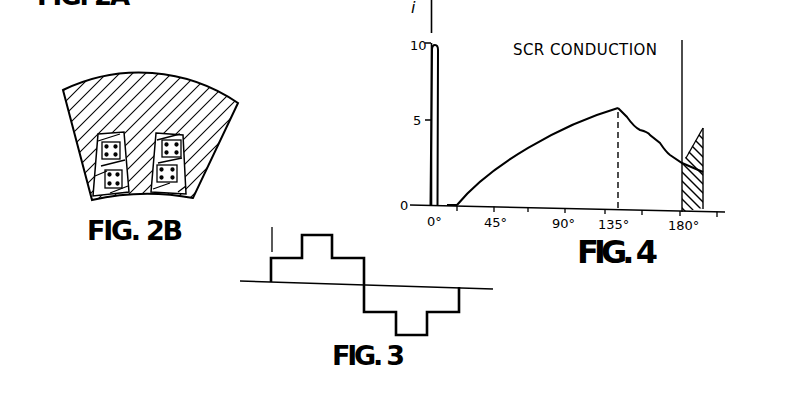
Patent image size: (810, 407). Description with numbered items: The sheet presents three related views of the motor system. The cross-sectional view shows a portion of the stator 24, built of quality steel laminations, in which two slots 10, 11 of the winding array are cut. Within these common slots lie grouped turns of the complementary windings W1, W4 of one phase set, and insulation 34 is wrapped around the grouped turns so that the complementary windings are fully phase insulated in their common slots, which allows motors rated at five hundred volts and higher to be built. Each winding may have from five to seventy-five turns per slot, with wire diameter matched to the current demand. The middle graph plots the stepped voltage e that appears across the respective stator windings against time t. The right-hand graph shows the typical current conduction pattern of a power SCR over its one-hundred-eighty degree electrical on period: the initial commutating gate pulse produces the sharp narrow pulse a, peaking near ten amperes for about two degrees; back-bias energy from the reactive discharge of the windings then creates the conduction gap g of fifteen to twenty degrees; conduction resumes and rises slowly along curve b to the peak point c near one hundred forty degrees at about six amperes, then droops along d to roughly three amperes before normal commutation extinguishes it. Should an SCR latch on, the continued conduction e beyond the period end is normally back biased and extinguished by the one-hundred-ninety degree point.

In FIG. 2B, the stator slot 10 is at (105, 131).
In FIG. 2B, the stator slot 11 is at (182, 134).
In FIG. 2B, the stator 24 is at (226, 137).
In FIG. 2B, the insulation 34 is at (187, 165).
In FIG. 2B, the winding turns W1 is at (103, 163).
In FIG. 2B, the winding turns W4 is at (93, 188).
In FIG. 4, the sharp narrow pulse a is at (441, 97).
In FIG. 4, the conduction curve b is at (550, 134).
In FIG. 4, the peak point c is at (620, 173).
In FIG. 4, the drooping conduction curve d is at (637, 126).
In FIG. 3, the continued conduction e is at (261, 239).
In FIG. 4, the continued conduction e is at (705, 163).
In FIG. 4, the conduction gap g is at (446, 202).
In FIG. 3, the time axis t is at (502, 289).